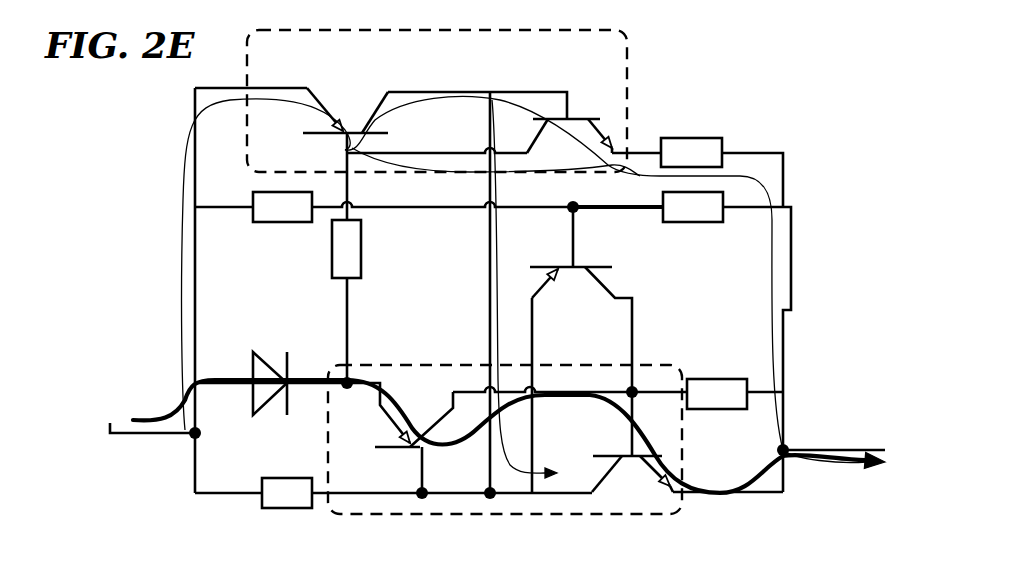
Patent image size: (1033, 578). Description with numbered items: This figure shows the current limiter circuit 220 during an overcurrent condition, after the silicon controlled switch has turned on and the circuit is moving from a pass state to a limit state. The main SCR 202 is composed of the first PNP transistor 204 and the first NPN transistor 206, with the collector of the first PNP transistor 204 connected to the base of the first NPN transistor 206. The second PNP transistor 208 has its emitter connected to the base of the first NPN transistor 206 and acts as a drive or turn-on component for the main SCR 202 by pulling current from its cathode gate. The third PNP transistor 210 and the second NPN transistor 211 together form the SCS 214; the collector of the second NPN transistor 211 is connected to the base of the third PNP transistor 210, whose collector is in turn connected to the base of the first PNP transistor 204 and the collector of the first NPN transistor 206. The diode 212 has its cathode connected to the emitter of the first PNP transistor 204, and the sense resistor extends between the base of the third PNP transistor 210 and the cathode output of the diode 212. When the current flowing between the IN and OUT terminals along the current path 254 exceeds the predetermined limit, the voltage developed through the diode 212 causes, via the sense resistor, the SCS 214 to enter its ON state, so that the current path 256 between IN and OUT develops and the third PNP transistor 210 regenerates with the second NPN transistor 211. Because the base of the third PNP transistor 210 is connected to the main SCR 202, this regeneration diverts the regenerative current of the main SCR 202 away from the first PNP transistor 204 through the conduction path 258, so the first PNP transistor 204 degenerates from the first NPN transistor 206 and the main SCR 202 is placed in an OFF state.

The current limiter circuit 220 is at (129, 282).
The SCS 214 is at (628, 52).
The third PNP transistor 210 is at (380, 100).
The second NPN transistor 211 is at (583, 117).
The second PNP transistor 208 is at (583, 265).
The main SCR 202 is at (507, 513).
The first PNP transistor 204 is at (397, 450).
The first NPN transistor 206 is at (625, 460).
The diode 212 is at (283, 352).
The current path 254 is at (182, 402).
The current path 256 is at (180, 212).
The conduction path 258 is at (497, 265).